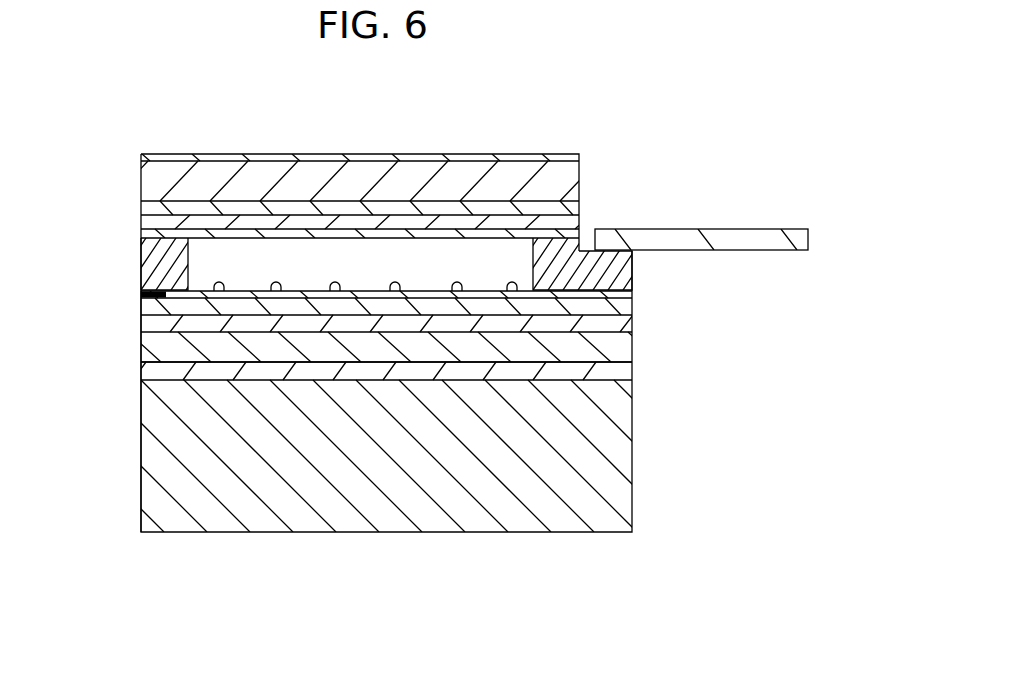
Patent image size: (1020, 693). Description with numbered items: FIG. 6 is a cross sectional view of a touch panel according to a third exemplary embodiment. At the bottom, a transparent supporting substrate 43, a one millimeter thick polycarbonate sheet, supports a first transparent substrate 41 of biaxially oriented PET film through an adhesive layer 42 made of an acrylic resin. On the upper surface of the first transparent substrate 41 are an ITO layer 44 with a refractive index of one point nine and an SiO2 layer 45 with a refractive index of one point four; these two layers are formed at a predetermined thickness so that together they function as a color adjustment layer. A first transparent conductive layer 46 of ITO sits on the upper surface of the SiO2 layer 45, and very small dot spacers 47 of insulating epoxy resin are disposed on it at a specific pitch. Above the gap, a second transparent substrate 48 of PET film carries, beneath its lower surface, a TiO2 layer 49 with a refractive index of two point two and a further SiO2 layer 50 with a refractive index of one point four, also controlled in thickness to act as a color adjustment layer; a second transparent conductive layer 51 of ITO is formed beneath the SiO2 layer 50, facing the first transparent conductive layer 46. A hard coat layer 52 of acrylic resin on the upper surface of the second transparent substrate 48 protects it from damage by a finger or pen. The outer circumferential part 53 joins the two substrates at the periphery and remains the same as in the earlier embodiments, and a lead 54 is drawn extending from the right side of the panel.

The first transparent substrate 41 is at (145, 382).
The adhesive layer 42 is at (357, 381).
The transparent supporting substrate 43 is at (399, 492).
The ITO layer 44 is at (163, 338).
The SiO2 layer 45 is at (162, 312).
The first transparent conductive layer 46 is at (145, 295).
The dot spacers 47 is at (461, 283).
The second transparent substrate 48 is at (262, 182).
The TiO2 layer 49 is at (320, 207).
The SiO2 layer 50 is at (380, 225).
The second transparent conductive layer 51 is at (438, 233).
The hard coat layer 52 is at (182, 158).
The outer circumferential part 53 is at (152, 260).
The lead terminal 54 is at (762, 252).